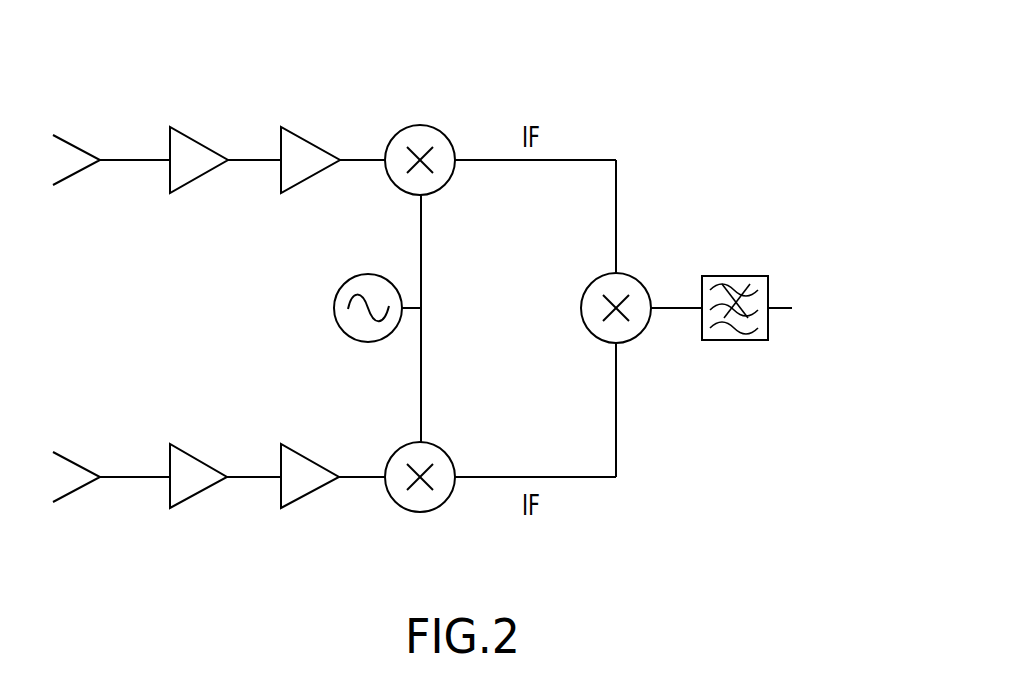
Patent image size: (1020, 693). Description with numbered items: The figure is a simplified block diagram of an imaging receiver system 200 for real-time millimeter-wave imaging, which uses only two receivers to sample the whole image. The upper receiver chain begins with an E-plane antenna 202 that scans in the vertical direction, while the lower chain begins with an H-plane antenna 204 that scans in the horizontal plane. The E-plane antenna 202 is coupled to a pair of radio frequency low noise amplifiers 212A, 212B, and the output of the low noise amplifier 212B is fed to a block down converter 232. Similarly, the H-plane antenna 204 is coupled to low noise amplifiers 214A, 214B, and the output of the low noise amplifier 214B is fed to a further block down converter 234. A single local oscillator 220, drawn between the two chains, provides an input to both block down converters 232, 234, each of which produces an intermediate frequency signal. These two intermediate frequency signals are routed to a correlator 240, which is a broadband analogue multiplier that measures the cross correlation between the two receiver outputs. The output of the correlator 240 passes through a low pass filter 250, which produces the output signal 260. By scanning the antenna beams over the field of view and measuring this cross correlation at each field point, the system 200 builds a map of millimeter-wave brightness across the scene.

The imaging receiver system 200 is at (675, 130).
The E-plane antenna 202 is at (82, 140).
The H-plane antenna 204 is at (80, 460).
The low noise amplifier 212A is at (203, 140).
The low noise amplifier 212B is at (313, 139).
The low noise amplifier 214A is at (203, 493).
The low noise amplifier 214B is at (317, 493).
The local oscillator 220 is at (345, 334).
The block down converter 232 is at (425, 125).
The block down converter 234 is at (438, 510).
The correlator 240 is at (588, 285).
The low pass filter 250 is at (760, 275).
The output signal 260 is at (854, 357).